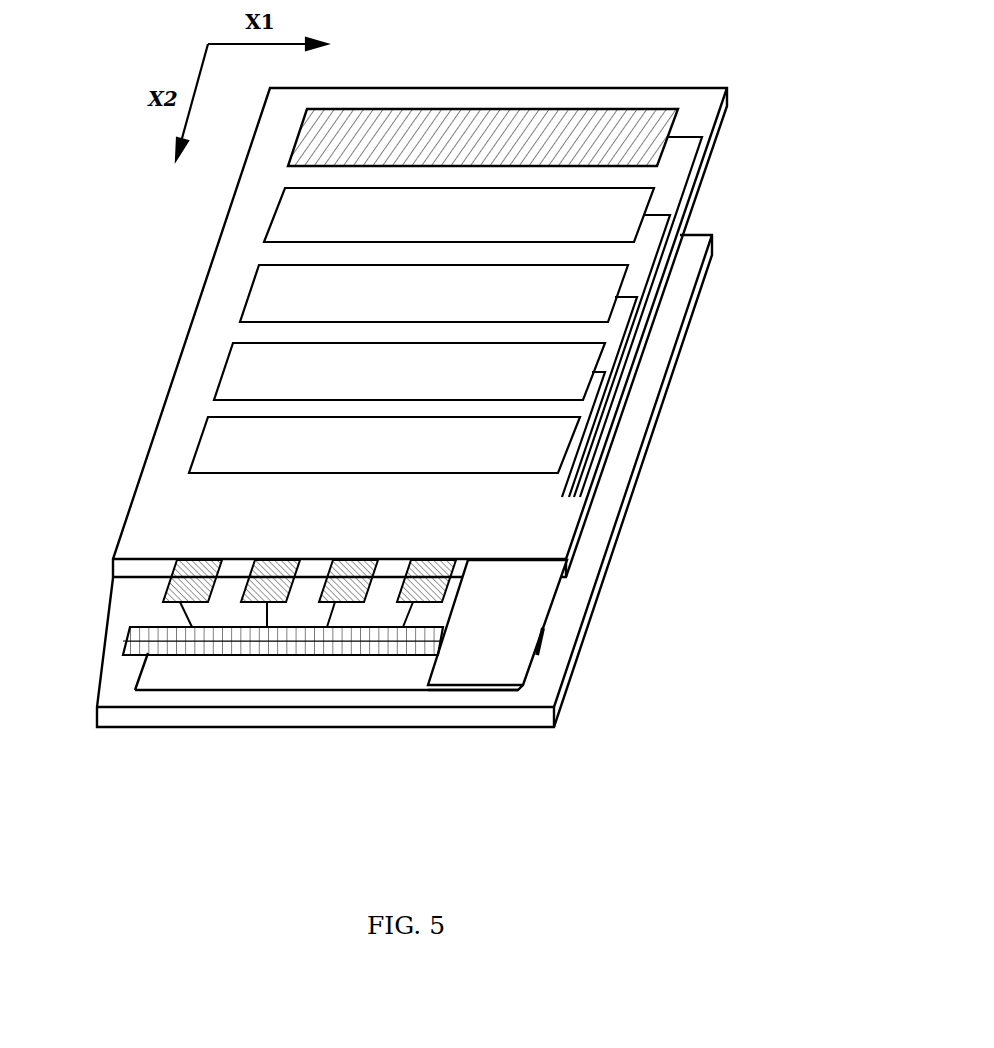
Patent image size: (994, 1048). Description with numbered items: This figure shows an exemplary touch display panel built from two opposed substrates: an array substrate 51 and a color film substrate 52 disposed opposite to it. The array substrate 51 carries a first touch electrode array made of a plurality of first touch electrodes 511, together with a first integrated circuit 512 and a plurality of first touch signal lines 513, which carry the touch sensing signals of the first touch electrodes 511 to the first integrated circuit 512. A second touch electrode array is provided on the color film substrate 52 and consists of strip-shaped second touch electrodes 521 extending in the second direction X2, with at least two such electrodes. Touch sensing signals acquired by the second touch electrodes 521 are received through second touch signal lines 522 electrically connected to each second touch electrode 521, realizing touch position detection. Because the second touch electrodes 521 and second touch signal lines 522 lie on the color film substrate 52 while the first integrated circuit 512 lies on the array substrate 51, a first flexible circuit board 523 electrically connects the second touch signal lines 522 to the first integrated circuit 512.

The array substrate 51 is at (677, 352).
The first touch electrode 511 is at (178, 589).
The first integrated circuit 512 is at (130, 638).
The first touch signal line 513 is at (178, 615).
The color film substrate 52 is at (713, 140).
The second touch electrode 521 is at (463, 120).
The second touch signal line 522 is at (678, 207).
The first flexible circuit board 523 is at (510, 613).